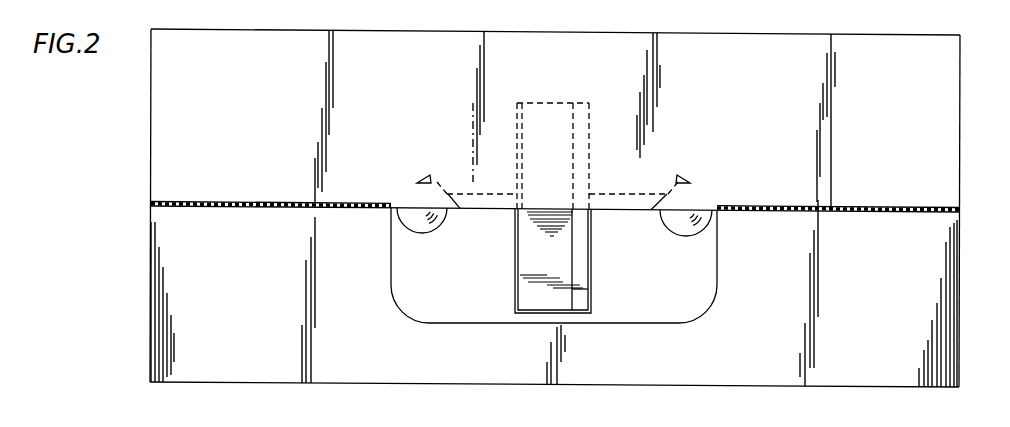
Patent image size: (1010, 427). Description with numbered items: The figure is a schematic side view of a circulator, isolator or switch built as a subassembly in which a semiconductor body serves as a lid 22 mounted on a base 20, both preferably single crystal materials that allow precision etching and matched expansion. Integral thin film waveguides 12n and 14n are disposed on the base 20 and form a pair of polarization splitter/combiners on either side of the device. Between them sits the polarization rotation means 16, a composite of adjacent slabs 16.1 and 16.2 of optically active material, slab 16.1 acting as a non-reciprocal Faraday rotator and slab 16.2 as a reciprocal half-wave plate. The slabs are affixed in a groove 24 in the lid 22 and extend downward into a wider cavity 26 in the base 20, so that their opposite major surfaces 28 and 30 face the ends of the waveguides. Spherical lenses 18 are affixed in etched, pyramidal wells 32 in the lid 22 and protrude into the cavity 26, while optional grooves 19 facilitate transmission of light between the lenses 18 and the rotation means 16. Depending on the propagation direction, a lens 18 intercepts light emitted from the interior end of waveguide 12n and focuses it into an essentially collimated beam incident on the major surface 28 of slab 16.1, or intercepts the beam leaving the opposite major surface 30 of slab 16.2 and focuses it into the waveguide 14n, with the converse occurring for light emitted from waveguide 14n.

The integral thin film waveguide 12n is at (151, 206).
The integral thin film waveguide 14n is at (960, 212).
The polarization rotation means 16 is at (568, 141).
The non-reciprocal rotator slab 16.1 is at (545, 113).
The reciprocal rotator slab 16.2 is at (586, 131).
The spherical lens 18 is at (415, 197).
The groove 19 is at (485, 191).
The base 20 is at (197, 345).
The lid 22 is at (167, 167).
The groove 24 is at (553, 103).
The cavity 26 is at (716, 299).
The major surface 28 is at (516, 267).
The major surface 30 is at (589, 258).
The etched well 32 is at (431, 180).